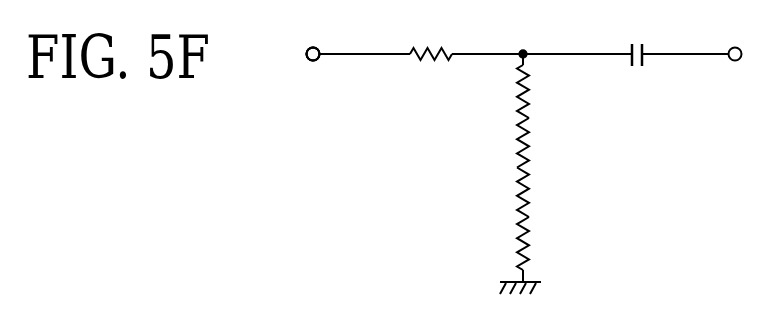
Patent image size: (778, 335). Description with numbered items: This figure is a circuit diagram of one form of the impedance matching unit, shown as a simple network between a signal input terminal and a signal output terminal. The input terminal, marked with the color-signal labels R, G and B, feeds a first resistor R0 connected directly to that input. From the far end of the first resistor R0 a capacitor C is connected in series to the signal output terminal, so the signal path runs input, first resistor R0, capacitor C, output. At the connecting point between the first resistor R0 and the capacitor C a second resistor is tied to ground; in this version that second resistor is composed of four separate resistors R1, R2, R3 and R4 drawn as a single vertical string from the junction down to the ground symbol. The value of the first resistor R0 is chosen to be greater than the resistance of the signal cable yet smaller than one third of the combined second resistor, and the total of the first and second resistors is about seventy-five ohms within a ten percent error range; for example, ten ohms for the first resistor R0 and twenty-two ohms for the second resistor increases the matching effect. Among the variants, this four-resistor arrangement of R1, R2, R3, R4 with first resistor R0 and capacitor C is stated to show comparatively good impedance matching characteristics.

The red input terminal R is at (297, 36).
The green input terminal G is at (297, 56).
The blue input terminal B is at (297, 77).
The first resistor R0 is at (431, 35).
The resistor R1 is at (496, 91).
The resistor R2 is at (493, 143).
The resistor R3 is at (493, 193).
The resistor R4 is at (493, 243).
The capacitor C is at (637, 35).